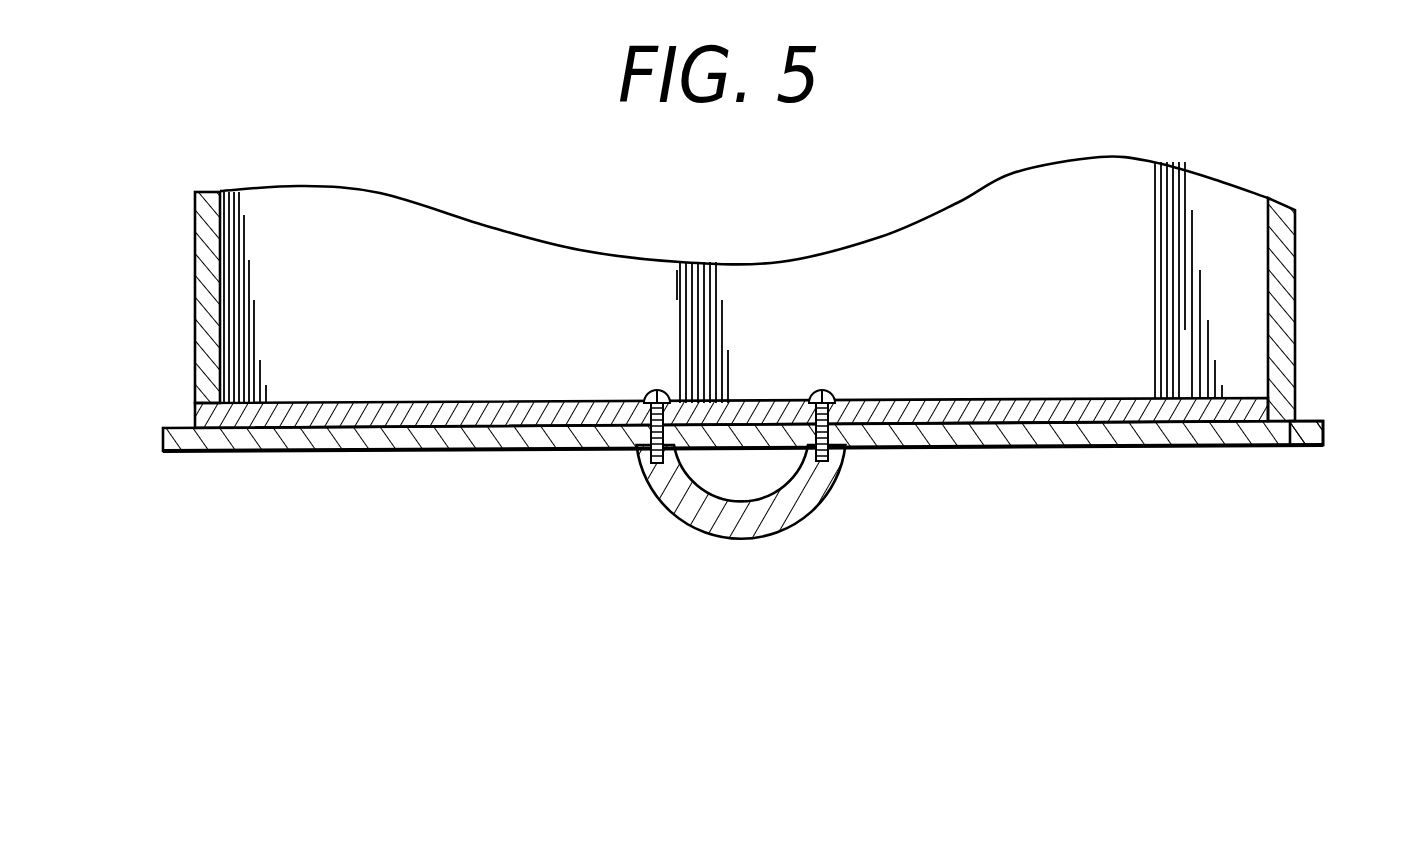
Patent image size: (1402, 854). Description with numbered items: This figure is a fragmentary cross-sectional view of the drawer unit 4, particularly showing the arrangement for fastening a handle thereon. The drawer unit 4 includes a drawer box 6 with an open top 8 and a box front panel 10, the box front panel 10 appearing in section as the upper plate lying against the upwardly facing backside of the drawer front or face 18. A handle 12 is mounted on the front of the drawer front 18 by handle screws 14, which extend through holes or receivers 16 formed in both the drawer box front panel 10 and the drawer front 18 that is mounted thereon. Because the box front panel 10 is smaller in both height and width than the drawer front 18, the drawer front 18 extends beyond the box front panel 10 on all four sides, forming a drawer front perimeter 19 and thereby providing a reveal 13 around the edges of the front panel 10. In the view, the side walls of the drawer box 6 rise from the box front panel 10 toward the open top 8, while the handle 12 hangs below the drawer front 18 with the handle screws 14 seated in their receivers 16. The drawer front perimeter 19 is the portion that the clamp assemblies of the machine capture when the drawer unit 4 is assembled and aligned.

The drawer unit 4 is at (228, 128).
The drawer box 6 is at (195, 193).
The open top 8 is at (222, 232).
The box front panel 10 is at (1295, 398).
The handle 12 is at (840, 490).
The reveal 13 is at (178, 428).
The handle screws 14 is at (645, 396).
The holes or receivers 16 is at (797, 410).
The drawer front 18 is at (162, 455).
The drawer front perimeter 19 is at (1322, 418).